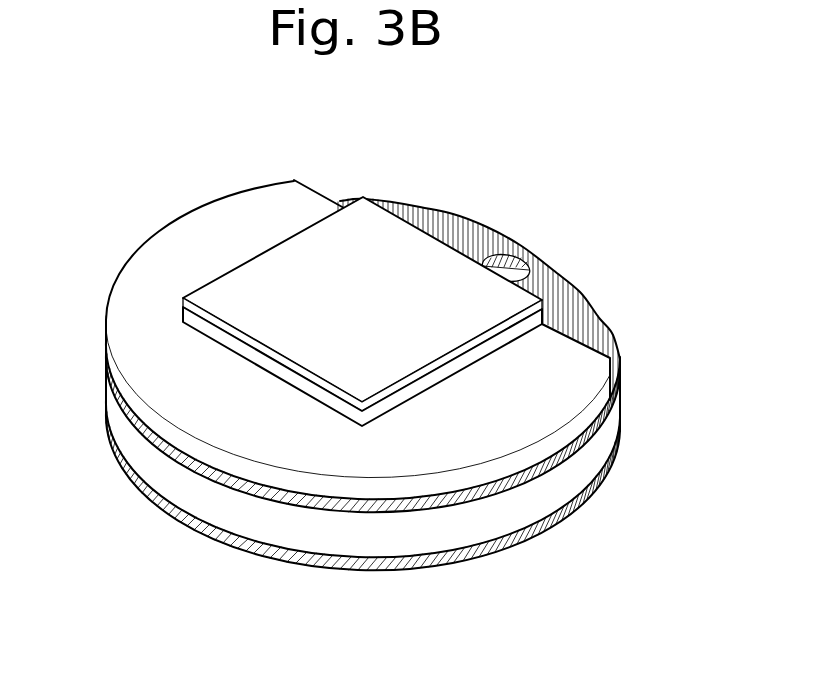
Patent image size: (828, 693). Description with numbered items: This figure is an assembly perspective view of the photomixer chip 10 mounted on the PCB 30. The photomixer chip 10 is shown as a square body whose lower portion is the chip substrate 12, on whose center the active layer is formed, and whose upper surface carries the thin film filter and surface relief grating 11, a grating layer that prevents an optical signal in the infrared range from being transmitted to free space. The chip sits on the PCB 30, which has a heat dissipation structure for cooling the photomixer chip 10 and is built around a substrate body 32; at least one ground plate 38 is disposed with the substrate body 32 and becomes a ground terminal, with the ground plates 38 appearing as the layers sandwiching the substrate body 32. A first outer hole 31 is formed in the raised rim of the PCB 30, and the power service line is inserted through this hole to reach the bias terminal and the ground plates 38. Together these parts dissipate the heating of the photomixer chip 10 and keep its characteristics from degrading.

The photomixer chip 10 is at (292, 287).
The thin film filter and surface relief grating 11 is at (238, 288).
The chip substrate 12 is at (208, 327).
The PCB 30 is at (630, 293).
The first outer hole 31 is at (503, 258).
The substrate body 32 is at (578, 471).
The ground plates 38 is at (610, 400).